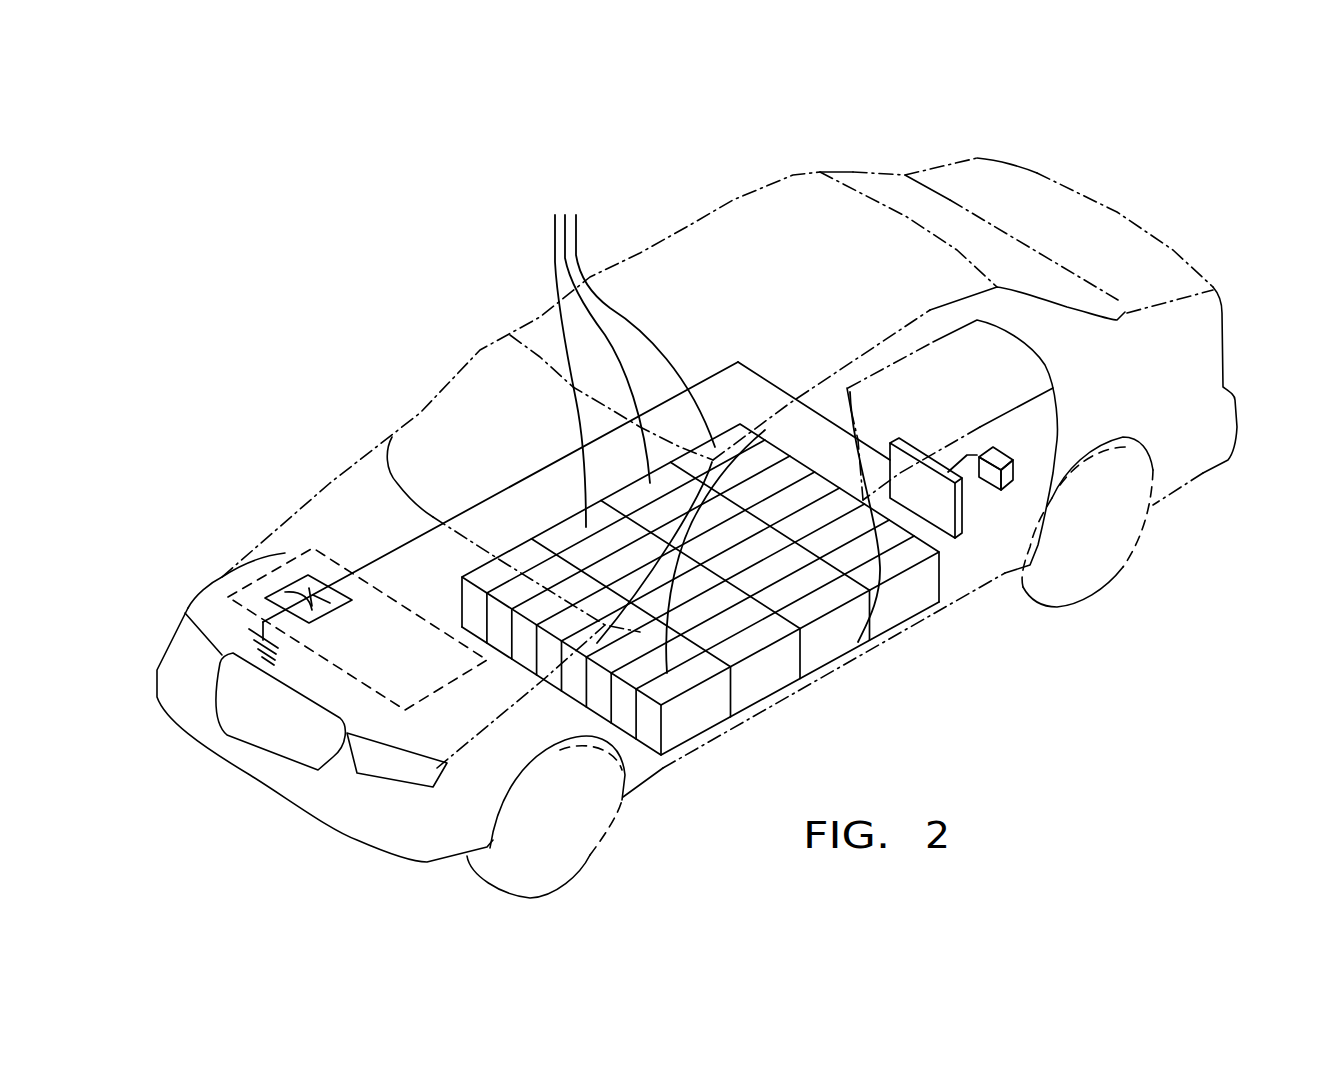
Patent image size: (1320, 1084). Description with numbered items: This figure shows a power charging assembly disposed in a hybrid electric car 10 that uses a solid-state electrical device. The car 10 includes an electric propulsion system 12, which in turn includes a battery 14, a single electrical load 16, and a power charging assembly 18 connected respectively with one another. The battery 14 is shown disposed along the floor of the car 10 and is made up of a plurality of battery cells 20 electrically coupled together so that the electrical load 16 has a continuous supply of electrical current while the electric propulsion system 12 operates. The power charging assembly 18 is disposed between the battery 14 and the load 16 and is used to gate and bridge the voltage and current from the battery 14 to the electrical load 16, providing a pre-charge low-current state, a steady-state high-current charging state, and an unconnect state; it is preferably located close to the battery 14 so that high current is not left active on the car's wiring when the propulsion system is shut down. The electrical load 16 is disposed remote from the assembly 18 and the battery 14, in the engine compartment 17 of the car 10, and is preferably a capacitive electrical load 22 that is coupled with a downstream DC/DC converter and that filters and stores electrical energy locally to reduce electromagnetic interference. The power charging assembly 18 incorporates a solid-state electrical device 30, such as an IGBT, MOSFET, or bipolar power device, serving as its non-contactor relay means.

The car 10 is at (1150, 116).
The electric propulsion system 12 is at (688, 773).
The battery 14 is at (518, 548).
The electrical load 16 is at (285, 583).
The engine compartment 17 is at (232, 590).
The power charging assembly 18 is at (962, 520).
The battery cells 20 is at (715, 430).
The capacitive electrical load 22 is at (310, 590).
The solid-state electrical device 30 is at (1010, 474).